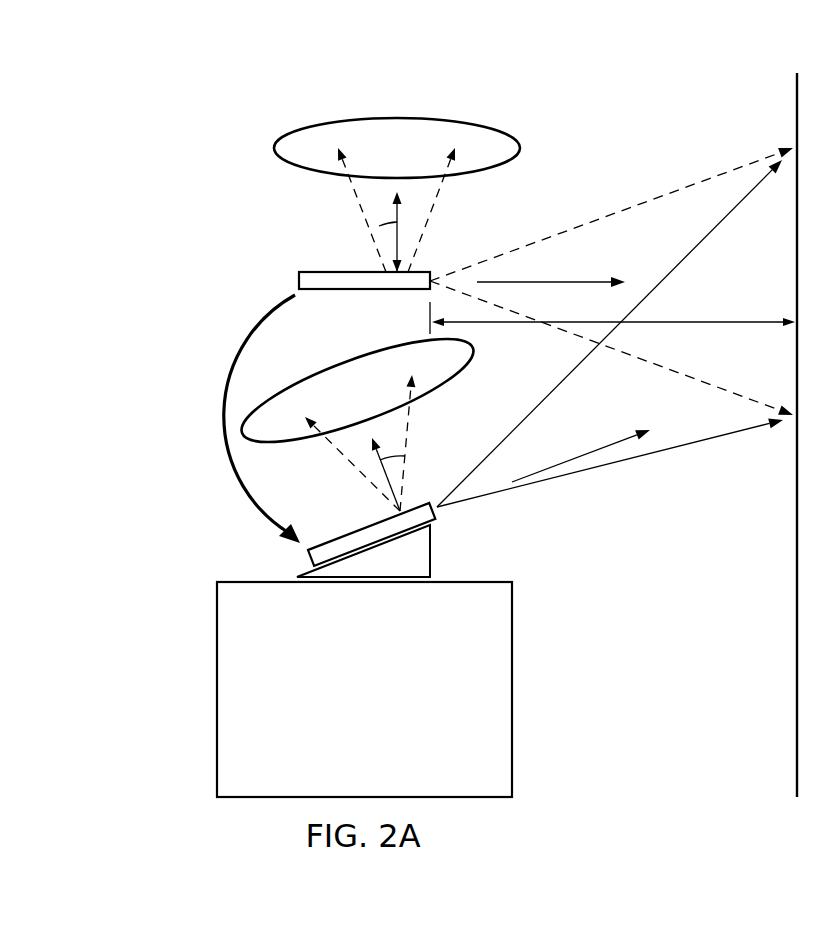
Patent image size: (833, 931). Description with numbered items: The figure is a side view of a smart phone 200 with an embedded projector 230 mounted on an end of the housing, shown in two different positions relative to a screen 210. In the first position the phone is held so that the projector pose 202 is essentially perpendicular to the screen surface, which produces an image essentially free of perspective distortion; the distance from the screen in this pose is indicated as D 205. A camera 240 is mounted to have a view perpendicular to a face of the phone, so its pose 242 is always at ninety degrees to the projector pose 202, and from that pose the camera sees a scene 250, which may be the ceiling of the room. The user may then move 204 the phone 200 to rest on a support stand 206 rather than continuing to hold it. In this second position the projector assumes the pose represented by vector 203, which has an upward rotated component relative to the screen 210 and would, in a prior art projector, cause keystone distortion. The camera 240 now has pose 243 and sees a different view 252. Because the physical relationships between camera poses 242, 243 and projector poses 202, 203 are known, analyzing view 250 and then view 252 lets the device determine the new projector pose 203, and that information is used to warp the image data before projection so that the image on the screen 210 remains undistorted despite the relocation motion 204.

The smart phone 200 is at (329, 411).
The projector pose 202 is at (597, 280).
The projector pose vector 203 is at (590, 451).
The move 204 is at (218, 417).
The distance D 205 is at (517, 322).
The support stand 206 is at (431, 552).
The screen 210 is at (786, 105).
The projector 230 is at (440, 281).
The camera 240 is at (330, 290).
The camera pose 242 is at (379, 226).
The camera pose 243 is at (405, 456).
The scene 250 is at (398, 117).
The view 252 is at (290, 447).